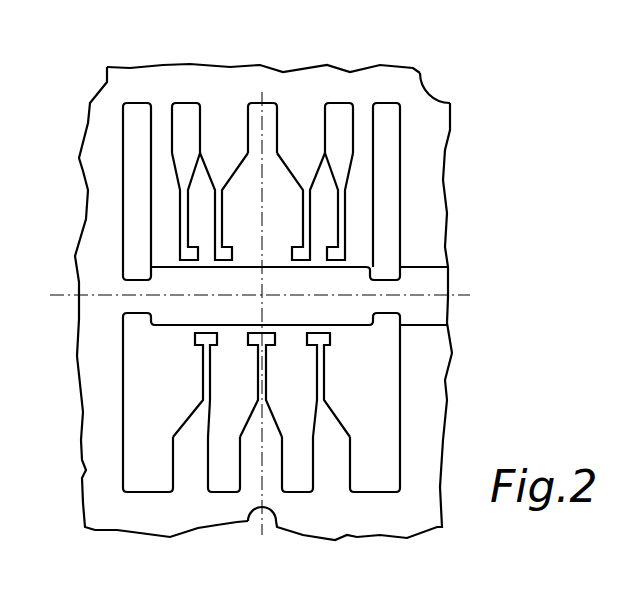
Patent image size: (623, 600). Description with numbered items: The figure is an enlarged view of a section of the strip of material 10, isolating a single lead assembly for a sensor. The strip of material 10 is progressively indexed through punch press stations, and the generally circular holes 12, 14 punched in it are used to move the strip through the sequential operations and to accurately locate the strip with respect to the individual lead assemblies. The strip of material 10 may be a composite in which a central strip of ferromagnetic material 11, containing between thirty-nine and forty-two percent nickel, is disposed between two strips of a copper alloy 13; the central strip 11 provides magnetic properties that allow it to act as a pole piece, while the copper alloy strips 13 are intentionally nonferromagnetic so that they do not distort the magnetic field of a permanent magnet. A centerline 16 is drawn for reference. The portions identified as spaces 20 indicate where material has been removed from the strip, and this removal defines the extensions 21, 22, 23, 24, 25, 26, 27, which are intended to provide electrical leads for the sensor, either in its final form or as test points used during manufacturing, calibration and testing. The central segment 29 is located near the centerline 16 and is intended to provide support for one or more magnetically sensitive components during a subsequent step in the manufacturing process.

The strip of material 10 is at (392, 72).
The central strip of ferromagnetic material 11 is at (444, 318).
The generally circular hole 12 is at (436, 94).
The strip of copper alloy 13 is at (445, 220).
The generally circular hole 14 is at (257, 523).
The centerline 16 is at (447, 295).
The spaces 20 is at (126, 178).
The extension 21 is at (179, 225).
The extension 22 is at (219, 213).
The extension 23 is at (302, 232).
The extension 24 is at (342, 243).
The extension 25 is at (200, 359).
The extension 26 is at (266, 371).
The extension 27 is at (323, 359).
The central segment 29 is at (213, 294).